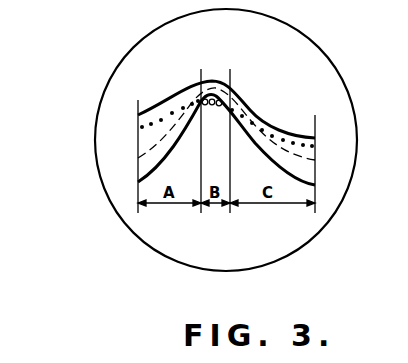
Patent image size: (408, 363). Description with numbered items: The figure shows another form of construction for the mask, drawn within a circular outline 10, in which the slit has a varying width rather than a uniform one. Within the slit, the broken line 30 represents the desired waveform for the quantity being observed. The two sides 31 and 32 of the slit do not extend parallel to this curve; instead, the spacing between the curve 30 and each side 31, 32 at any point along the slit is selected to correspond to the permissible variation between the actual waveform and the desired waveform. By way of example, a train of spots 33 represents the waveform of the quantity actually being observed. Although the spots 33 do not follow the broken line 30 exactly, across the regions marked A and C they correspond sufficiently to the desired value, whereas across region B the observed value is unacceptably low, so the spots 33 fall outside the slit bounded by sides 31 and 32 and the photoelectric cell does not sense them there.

The lens 10 is at (332, 85).
The broken line 30 is at (300, 157).
The side of the slit 31 is at (263, 118).
The side of the slit 32 is at (268, 163).
The train of spots 33 is at (180, 110).